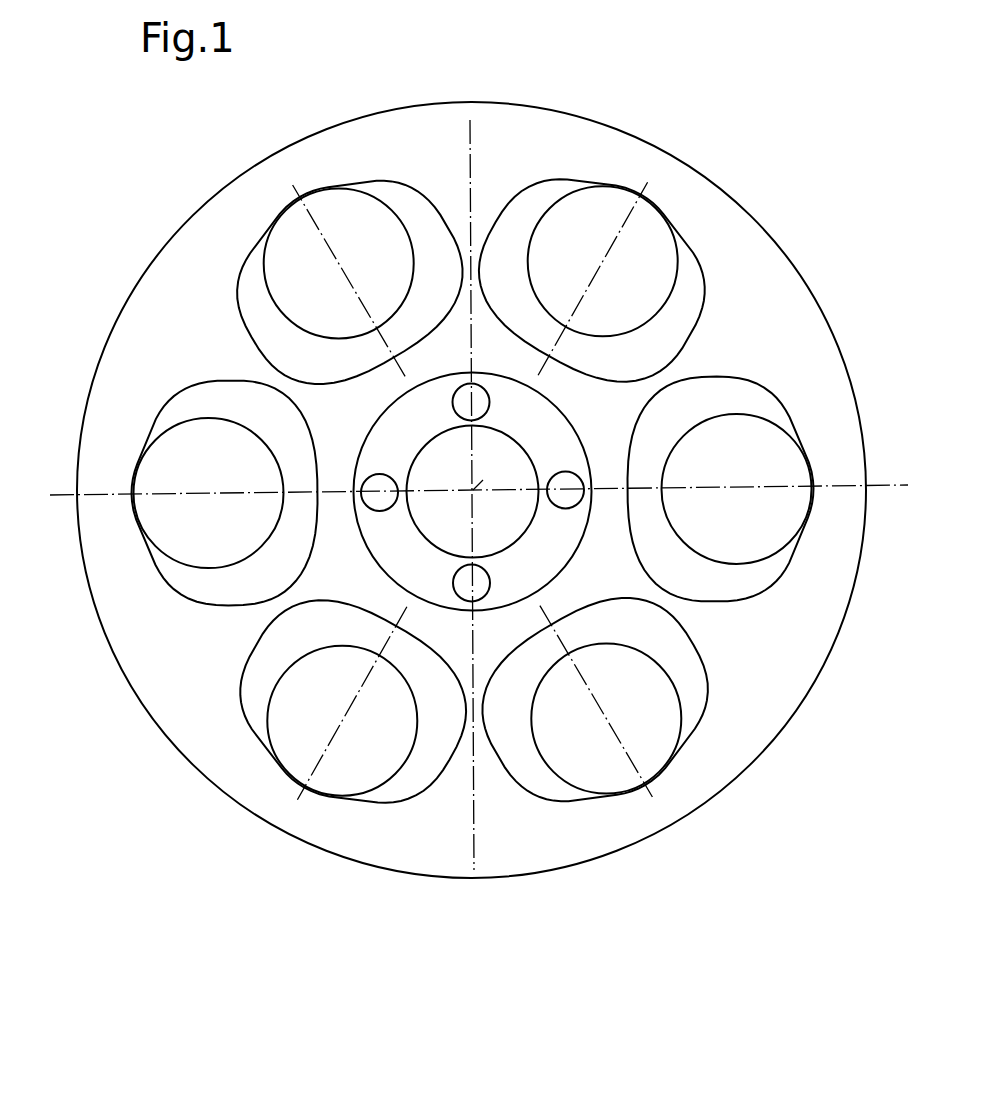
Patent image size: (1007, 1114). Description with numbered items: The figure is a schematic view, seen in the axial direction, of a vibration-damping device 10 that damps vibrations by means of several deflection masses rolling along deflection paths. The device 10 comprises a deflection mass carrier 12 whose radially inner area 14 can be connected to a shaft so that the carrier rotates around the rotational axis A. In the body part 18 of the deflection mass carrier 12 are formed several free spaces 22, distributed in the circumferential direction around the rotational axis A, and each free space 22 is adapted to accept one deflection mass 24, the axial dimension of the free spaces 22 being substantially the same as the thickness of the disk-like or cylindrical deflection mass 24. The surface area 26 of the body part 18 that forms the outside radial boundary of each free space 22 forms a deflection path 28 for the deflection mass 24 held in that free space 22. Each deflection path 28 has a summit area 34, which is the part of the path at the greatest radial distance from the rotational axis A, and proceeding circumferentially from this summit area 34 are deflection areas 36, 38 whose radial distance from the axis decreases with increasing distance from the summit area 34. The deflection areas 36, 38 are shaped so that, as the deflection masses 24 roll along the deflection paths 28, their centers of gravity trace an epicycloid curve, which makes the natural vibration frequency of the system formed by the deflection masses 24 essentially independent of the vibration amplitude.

The vibration-damping device 10 is at (708, 86).
The deflection mass carrier 12 is at (391, 108).
The radially inner area 14 is at (398, 437).
The body part 18 is at (776, 257).
The free space 22 is at (423, 227).
The deflection mass 24 is at (475, 758).
The surface area 26 is at (637, 767).
The deflection path 28 is at (565, 788).
The summit area 34 is at (296, 788).
The deflection area 36 is at (230, 688).
The deflection area 38 is at (377, 797).